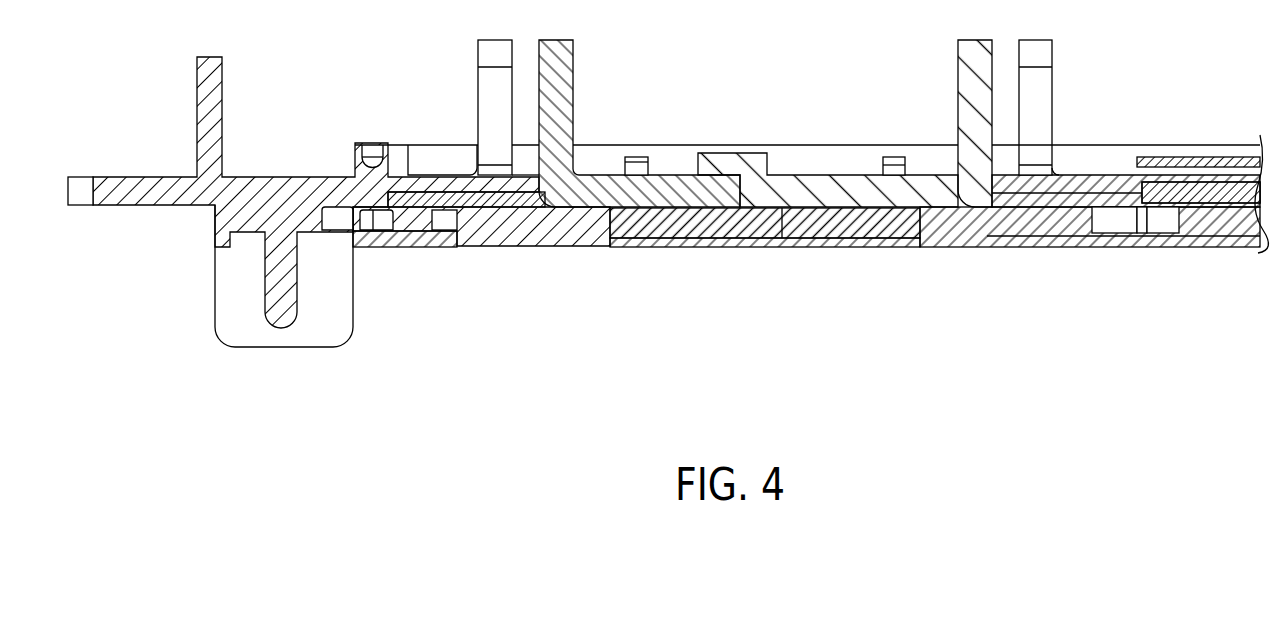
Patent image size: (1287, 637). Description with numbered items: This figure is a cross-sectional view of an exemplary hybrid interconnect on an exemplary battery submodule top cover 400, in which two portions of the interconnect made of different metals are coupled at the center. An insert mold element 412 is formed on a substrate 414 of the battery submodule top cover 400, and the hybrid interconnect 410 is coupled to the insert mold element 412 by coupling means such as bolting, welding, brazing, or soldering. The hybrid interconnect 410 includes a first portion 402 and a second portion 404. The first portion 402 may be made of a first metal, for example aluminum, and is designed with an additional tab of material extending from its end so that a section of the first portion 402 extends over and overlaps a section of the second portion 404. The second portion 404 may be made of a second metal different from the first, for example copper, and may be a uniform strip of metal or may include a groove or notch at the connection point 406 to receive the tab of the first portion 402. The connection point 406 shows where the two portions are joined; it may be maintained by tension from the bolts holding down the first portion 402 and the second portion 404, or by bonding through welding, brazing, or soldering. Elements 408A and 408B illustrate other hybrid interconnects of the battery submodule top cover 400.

The battery submodule top cover 400 is at (290, 378).
The first portion 402 is at (972, 82).
The second portion 404 is at (557, 83).
The connection point 406 is at (740, 192).
The hybrid interconnect 408A is at (1044, 83).
The hybrid interconnect 408B is at (490, 83).
The hybrid interconnect 410 is at (549, 220).
The insert mold element 412 is at (828, 215).
The substrate 414 is at (980, 233).